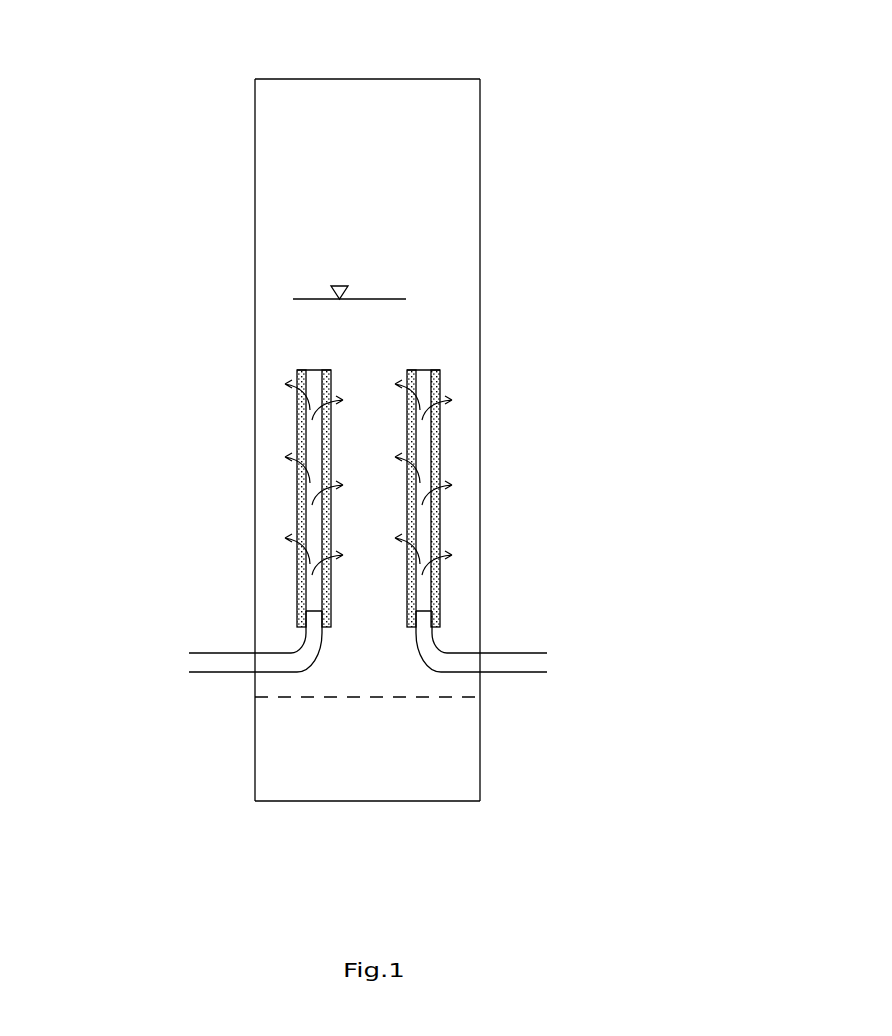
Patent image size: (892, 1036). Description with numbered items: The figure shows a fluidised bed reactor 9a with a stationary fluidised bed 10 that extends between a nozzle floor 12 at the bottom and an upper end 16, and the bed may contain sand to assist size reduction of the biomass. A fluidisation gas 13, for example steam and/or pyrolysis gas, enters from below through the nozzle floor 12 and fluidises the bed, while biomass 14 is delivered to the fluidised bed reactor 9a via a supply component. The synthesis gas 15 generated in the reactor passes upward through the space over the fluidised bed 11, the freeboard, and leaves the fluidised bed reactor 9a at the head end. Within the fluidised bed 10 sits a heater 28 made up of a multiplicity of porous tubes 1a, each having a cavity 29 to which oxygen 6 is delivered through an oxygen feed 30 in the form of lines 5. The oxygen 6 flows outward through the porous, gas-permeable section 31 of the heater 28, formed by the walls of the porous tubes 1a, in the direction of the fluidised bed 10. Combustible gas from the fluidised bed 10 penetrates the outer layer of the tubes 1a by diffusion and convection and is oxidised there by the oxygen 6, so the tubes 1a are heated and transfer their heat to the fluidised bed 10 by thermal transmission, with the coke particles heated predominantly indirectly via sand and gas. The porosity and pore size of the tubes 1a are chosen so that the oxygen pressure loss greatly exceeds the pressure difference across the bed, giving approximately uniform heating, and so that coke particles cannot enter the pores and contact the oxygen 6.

The porous tube 1a is at (369, 498).
The line 5 is at (529, 652).
The oxygen 6 is at (182, 662).
The fluidised bed reactor 9a is at (414, 440).
The fluidised bed 10 is at (452, 331).
The space over the fluidised bed 11 is at (451, 146).
The nozzle floor 12 is at (443, 697).
The fluidisation gas 13 is at (370, 801).
The biomass 14 is at (255, 583).
The synthesis gas 15 is at (367, 79).
The upper end 16 is at (386, 299).
The heater 28 is at (515, 518).
The cavity 29 is at (312, 442).
The oxygen feed 30 is at (232, 705).
The porous, gas-permeable section 31 is at (298, 477).